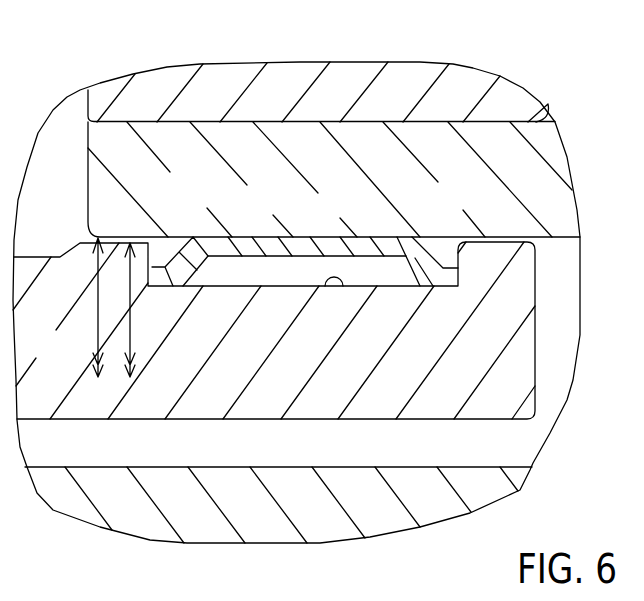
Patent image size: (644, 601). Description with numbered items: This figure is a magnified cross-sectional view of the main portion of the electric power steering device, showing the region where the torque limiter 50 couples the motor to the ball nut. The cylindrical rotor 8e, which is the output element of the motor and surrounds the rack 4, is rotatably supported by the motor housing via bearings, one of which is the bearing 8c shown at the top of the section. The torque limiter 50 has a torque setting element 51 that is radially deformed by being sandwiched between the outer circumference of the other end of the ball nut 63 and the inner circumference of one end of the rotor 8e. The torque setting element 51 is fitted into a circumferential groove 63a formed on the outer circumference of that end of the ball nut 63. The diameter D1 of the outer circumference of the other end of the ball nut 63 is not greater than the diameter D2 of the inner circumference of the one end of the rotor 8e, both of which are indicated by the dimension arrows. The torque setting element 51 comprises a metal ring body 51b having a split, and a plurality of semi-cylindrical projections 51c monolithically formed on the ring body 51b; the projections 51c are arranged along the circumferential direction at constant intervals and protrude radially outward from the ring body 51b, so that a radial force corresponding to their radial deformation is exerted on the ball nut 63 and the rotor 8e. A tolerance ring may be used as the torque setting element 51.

The bearing 8c is at (297, 79).
The rotor 8e is at (362, 140).
The torque limiter 50 is at (307, 236).
The torque setting element 51 is at (333, 248).
The ring body 51b is at (153, 266).
The semi-cylindrical projections 51c is at (268, 248).
The ball nut 63 is at (274, 419).
The circumferential groove 63a is at (335, 287).
The rack 4 is at (330, 520).
The diameter of the outer circumference of the ball nut D1 is at (130, 335).
The diameter of the inner circumference of the rotor D2 is at (97, 327).